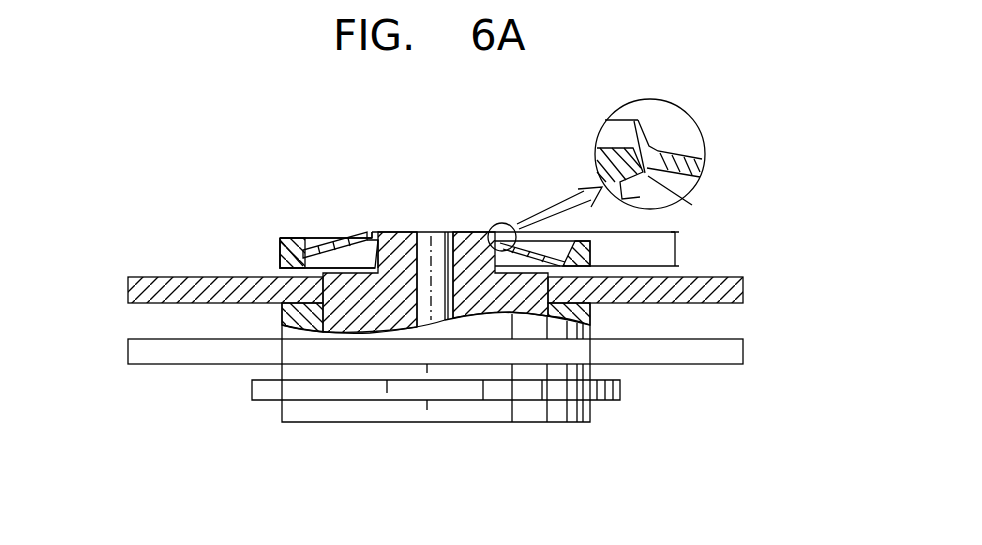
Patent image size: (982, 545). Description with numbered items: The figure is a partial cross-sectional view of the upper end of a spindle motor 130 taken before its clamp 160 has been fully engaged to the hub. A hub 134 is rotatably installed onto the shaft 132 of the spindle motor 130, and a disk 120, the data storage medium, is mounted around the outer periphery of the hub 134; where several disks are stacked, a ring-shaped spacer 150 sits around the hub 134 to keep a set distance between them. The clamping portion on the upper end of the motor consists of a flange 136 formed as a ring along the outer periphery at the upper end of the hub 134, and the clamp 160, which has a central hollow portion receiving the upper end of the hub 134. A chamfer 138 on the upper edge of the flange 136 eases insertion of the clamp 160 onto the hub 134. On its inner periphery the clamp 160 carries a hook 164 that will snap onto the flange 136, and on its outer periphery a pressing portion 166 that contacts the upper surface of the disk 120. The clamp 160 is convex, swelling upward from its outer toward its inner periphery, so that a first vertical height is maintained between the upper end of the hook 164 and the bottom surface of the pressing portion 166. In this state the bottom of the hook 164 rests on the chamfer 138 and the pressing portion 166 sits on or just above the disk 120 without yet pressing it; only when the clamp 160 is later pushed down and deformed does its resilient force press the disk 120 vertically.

The disk 120 is at (744, 293).
The spindle motor 130 is at (610, 425).
The shaft 132 is at (440, 230).
The hub 134 is at (480, 230).
The flange 136 is at (507, 226).
The chamfer 138 is at (633, 146).
The ring-shaped spacer 150 is at (592, 320).
The clamp 160 is at (350, 219).
The hook 164 is at (375, 232).
The pressing portion 166 is at (290, 240).